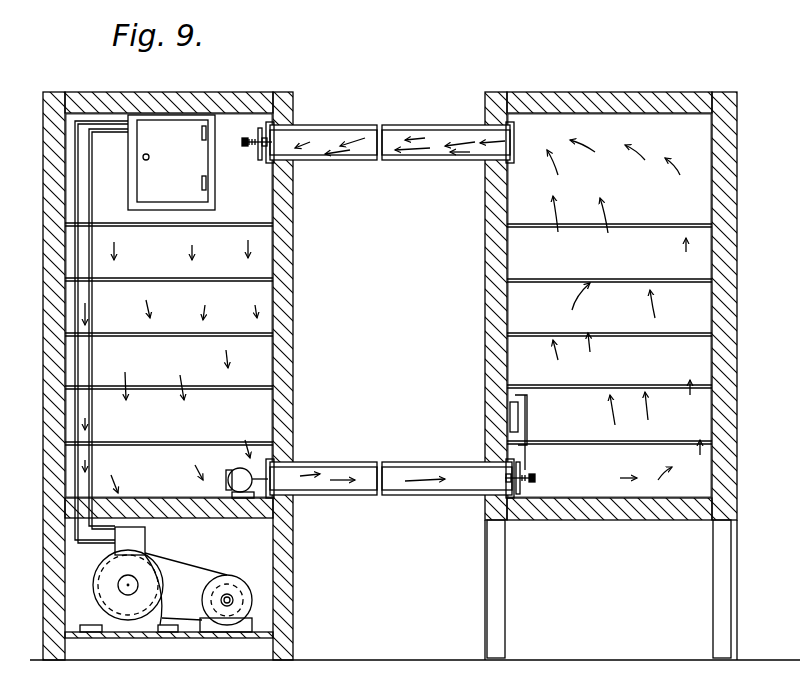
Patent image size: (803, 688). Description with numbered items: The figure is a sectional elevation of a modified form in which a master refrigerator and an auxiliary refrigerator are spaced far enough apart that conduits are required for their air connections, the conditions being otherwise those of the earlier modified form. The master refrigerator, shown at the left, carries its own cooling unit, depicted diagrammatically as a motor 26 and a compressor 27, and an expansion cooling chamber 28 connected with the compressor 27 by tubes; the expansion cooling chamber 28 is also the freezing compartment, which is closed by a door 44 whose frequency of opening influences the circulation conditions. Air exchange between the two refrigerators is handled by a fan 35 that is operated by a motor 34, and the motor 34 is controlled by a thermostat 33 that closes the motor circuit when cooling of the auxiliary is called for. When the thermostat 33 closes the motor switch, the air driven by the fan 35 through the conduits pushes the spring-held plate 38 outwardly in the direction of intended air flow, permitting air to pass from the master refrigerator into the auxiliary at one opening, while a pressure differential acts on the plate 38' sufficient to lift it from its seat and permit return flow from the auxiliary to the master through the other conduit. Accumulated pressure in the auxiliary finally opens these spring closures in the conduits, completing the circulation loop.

The motor 26 is at (231, 576).
The compressor 27 is at (143, 537).
The expansion cooling chamber 28 is at (187, 162).
The thermostat 33 is at (527, 412).
The motor 34 is at (248, 462).
The fan 35 is at (302, 470).
The plate 38 is at (545, 481).
The plate 38' is at (254, 160).
The door to the freezing compartment 44 is at (228, 196).